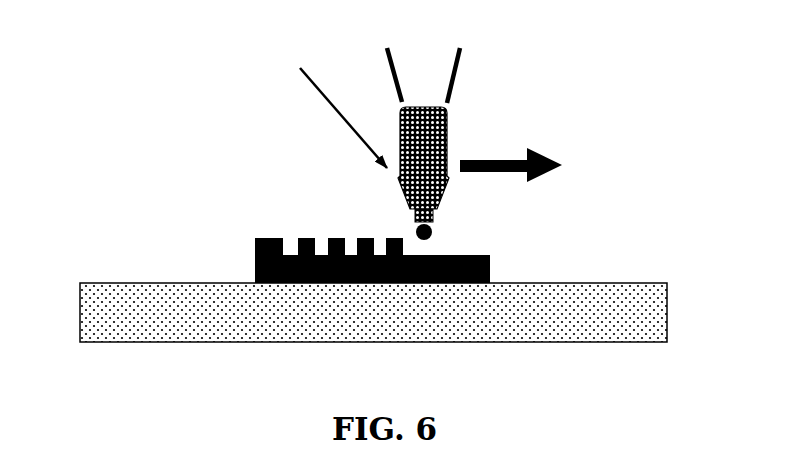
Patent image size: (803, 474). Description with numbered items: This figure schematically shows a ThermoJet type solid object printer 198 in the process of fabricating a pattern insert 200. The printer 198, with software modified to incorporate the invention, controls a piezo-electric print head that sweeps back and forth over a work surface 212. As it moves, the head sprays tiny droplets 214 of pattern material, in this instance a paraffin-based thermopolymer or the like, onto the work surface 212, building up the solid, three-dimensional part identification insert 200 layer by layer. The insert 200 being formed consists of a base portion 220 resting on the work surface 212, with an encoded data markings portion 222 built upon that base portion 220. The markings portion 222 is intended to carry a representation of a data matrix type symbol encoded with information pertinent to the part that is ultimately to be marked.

The solid object printer 198 is at (485, 52).
The pattern insert 200 is at (346, 199).
The work surface 212 is at (133, 282).
The droplets 214 is at (446, 229).
The base portion 220 is at (490, 265).
The encoded data markings portion 222 is at (313, 238).